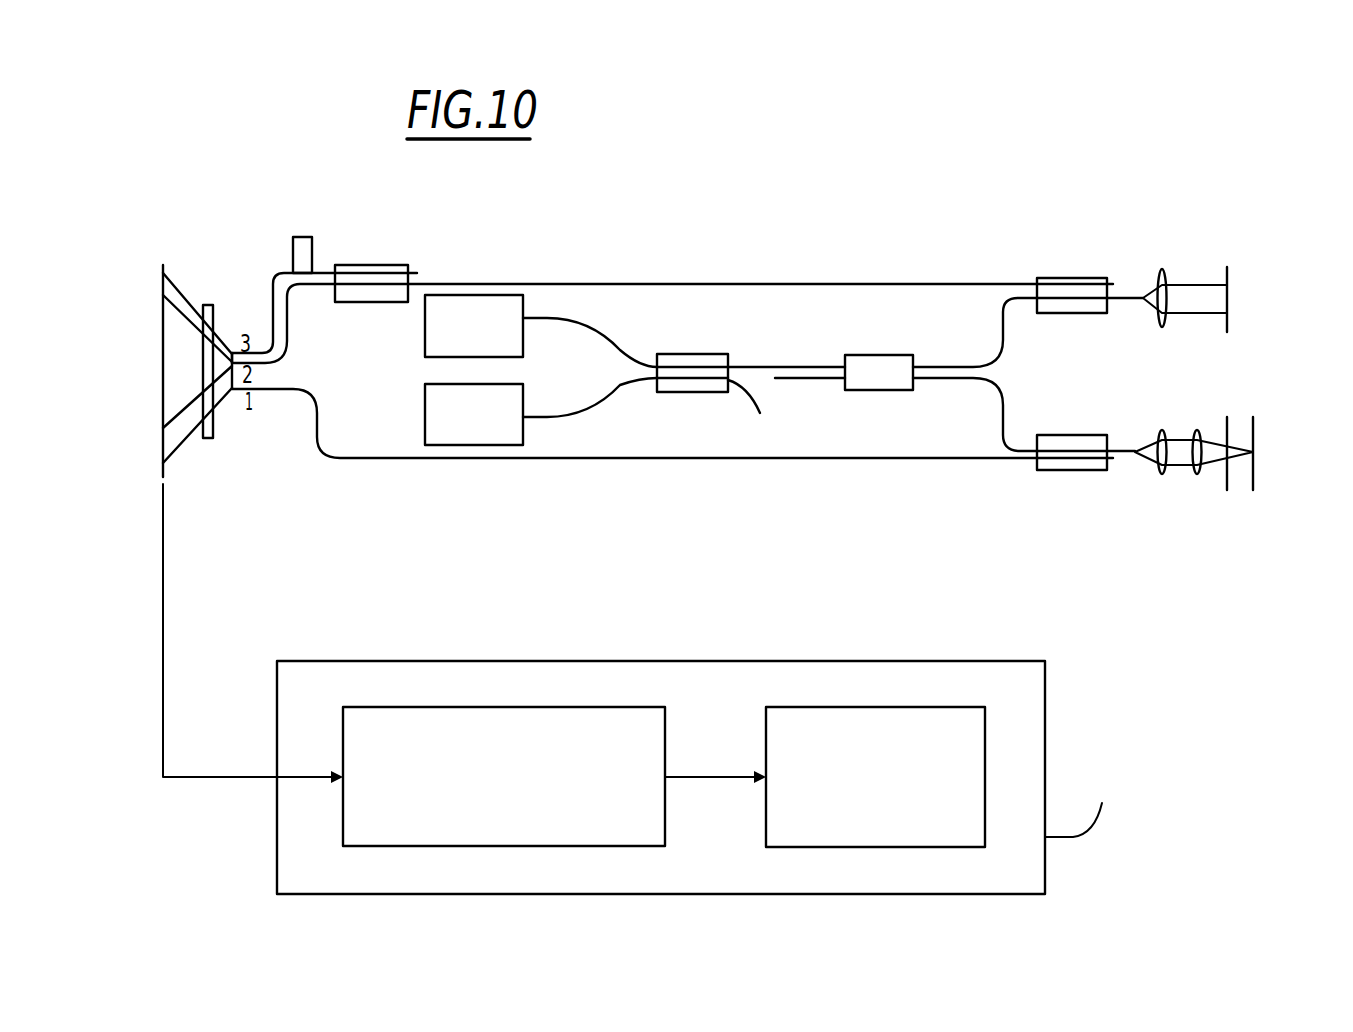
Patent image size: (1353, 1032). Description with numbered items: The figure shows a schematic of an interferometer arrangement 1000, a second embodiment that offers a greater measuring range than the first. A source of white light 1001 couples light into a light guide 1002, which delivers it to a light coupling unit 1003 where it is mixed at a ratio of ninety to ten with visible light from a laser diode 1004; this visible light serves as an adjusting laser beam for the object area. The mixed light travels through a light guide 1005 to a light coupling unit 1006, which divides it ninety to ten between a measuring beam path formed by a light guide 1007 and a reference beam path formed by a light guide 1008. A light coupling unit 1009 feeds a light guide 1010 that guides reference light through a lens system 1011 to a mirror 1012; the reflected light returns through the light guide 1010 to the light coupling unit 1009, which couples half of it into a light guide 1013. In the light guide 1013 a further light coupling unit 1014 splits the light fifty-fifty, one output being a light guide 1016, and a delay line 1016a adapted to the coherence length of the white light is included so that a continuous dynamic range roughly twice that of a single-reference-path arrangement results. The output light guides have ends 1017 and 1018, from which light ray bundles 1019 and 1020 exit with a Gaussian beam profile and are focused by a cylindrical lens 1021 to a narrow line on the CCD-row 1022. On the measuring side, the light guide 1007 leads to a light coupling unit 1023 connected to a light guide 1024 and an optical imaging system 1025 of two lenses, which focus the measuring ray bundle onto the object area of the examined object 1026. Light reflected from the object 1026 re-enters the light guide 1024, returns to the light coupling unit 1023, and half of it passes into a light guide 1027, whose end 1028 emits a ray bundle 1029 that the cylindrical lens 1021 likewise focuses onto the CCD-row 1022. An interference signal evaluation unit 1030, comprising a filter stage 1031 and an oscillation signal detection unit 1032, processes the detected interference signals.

The interferometer arrangement 1000 is at (655, 222).
The source of white light 1001 is at (477, 303).
The light guide 1002 is at (583, 323).
The light coupling unit 1003 is at (700, 380).
The laser diode 1004 is at (473, 433).
The light guide 1005 is at (760, 365).
The light coupling unit 1006 is at (888, 383).
The light guide 1007 is at (1003, 393).
The light guide 1008 is at (1003, 300).
The light coupling unit 1009 is at (1073, 282).
The light guide 1010 is at (1127, 297).
The lens system 1011 is at (1178, 270).
The mirror 1012 is at (1230, 302).
The light guide 1013 is at (883, 285).
The light coupling unit 1014 is at (372, 268).
The light guide 1016 is at (278, 276).
The delay line 1016a is at (300, 237).
The end 1017 is at (229, 348).
The end 1018 is at (238, 350).
The light ray bundle 1019 is at (163, 315).
The light ray bundle 1020 is at (183, 330).
The cylindrical lens 1021 is at (207, 443).
The CCD-row 1022 is at (163, 413).
The light coupling unit 1023 is at (1070, 443).
The light guide 1024 is at (1123, 457).
The optical imaging system 1025 is at (1186, 427).
The object 1026 is at (1243, 490).
The light guide 1027 is at (633, 458).
The end 1028 is at (234, 394).
The ray bundle 1029 is at (219, 398).
The interference signal evaluation unit 1030 is at (702, 693).
The filter stage 1031 is at (443, 718).
The oscillation signal detection unit 1032 is at (880, 720).